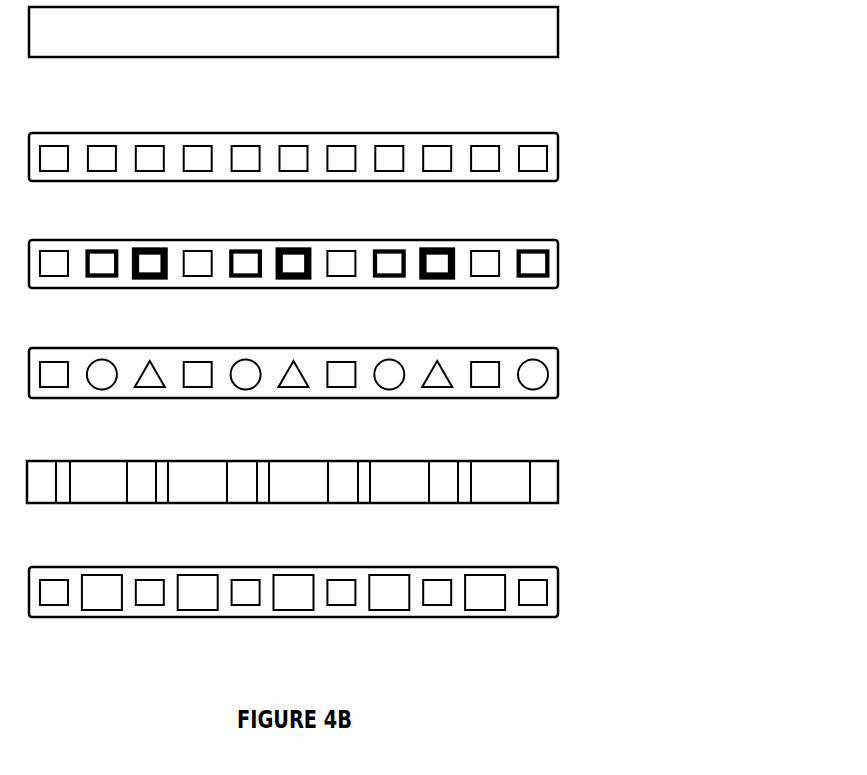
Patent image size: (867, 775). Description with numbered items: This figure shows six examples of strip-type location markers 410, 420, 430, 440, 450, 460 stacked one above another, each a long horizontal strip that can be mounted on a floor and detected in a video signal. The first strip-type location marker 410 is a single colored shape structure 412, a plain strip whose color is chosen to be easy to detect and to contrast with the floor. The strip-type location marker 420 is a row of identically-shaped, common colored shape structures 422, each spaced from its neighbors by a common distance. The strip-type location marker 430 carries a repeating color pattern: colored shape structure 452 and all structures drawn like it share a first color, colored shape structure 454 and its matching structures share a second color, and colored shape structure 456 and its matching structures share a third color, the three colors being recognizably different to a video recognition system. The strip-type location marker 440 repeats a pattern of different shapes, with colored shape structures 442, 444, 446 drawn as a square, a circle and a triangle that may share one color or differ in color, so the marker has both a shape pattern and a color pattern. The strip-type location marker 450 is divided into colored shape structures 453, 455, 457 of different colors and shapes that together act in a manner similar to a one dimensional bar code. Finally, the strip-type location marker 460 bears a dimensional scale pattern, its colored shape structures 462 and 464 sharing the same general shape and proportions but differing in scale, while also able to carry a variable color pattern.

The strip-type location marker 410 is at (558, 32).
The colored shape structure 412 is at (293, 43).
The strip-type location marker 420 is at (368, 175).
The shape structure 422 is at (55, 157).
The strip-type location marker 430 is at (368, 284).
The colored shape structure 452 is at (55, 262).
The colored shape structure 454 is at (247, 261).
The colored shape structure 456 is at (437, 262).
The strip-type location marker 440 is at (368, 395).
The colored shape structure 442 is at (55, 375).
The colored shape structure 444 is at (247, 375).
The colored shape structure 446 is at (438, 380).
The strip-type location marker 450 is at (367, 506).
The colored shape structure 453 is at (40, 473).
The colored shape structure 455 is at (163, 473).
The colored shape structure 457 is at (299, 473).
The strip-type location marker 460 is at (368, 613).
The colored shape structure 462 is at (198, 588).
The colored shape structure 464 is at (437, 592).